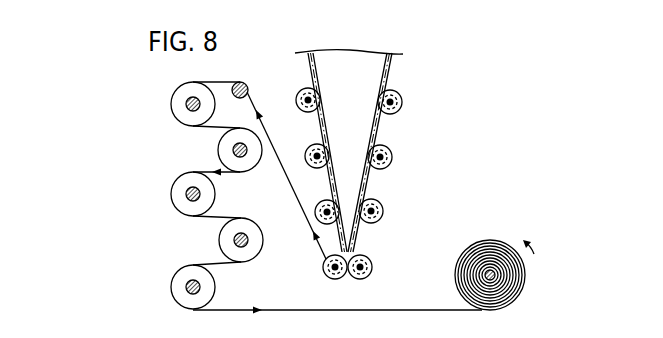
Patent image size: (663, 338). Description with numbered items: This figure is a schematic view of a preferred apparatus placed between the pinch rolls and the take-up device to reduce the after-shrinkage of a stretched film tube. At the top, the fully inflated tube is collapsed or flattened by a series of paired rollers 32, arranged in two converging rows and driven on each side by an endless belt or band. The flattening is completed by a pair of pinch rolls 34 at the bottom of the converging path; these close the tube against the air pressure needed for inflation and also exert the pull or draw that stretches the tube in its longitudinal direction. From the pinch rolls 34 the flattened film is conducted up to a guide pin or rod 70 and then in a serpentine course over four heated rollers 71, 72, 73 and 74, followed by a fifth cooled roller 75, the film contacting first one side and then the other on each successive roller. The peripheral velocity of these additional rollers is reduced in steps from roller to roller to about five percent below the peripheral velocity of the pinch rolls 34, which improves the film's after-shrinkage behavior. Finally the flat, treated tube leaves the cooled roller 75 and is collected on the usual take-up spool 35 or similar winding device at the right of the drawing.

The paired rollers 32 is at (390, 148).
The pinch rolls 34 is at (340, 278).
The take-up spool 35 is at (493, 243).
The guide pin or rod 70 is at (244, 83).
The heated roller 71 is at (172, 104).
The heated roller 72 is at (218, 150).
The heated roller 73 is at (172, 195).
The heated roller 74 is at (219, 240).
The cooled roller 75 is at (172, 289).